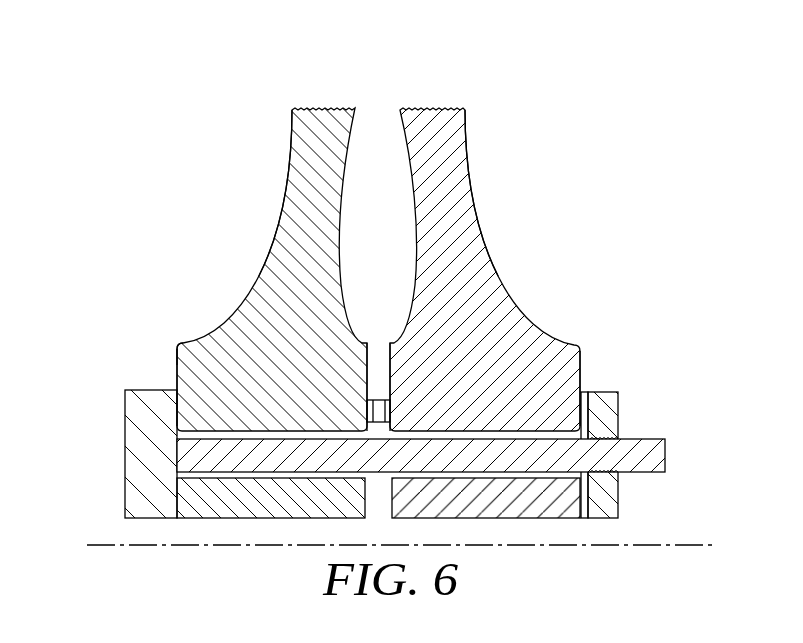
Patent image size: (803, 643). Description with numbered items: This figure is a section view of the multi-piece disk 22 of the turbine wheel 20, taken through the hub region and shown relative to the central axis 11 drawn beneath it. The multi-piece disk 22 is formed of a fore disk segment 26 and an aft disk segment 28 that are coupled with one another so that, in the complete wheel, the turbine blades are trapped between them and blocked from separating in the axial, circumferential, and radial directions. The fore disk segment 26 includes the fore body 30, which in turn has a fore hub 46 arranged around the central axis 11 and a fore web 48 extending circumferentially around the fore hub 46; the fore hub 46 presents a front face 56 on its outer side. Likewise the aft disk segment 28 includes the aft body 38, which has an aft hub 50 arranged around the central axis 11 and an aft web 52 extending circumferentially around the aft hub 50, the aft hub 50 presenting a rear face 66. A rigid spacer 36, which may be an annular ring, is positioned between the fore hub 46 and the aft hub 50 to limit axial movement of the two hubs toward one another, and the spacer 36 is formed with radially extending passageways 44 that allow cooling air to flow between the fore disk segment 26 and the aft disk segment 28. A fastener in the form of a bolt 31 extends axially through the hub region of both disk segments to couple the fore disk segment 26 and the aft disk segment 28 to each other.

The central axis 11 is at (152, 545).
The turbine wheel 20 is at (142, 117).
The multi-piece disk 22 is at (477, 128).
The fore disk segment 26 is at (192, 245).
The aft disk segment 28 is at (515, 235).
The fore body 30 is at (250, 245).
The bolts 31 is at (125, 455).
The spacer 36 is at (367, 343).
The aft body 38 is at (520, 287).
The radially extending passageways 44 is at (380, 397).
The fore hub 46 is at (175, 358).
The fore web 48 is at (288, 167).
The aft hub 50 is at (582, 352).
The aft web 52 is at (468, 172).
The front face 56 is at (175, 368).
The rear face 66 is at (582, 368).